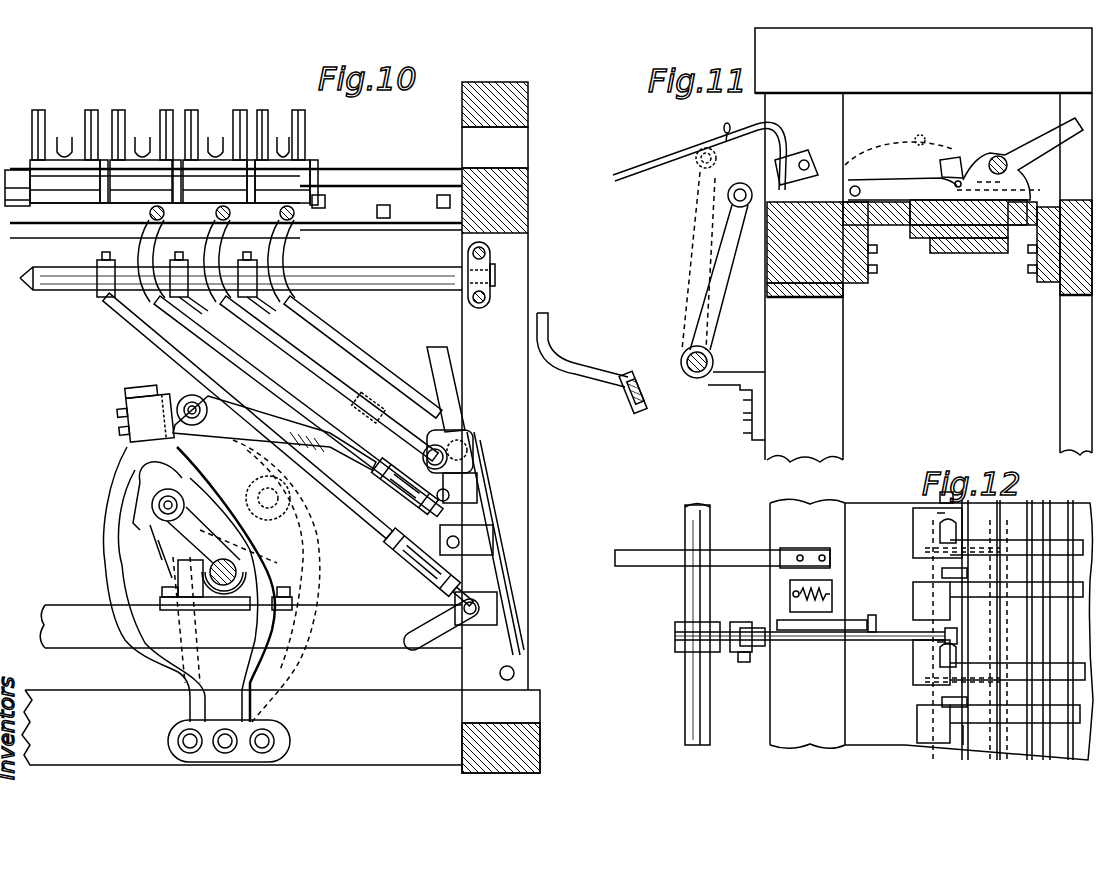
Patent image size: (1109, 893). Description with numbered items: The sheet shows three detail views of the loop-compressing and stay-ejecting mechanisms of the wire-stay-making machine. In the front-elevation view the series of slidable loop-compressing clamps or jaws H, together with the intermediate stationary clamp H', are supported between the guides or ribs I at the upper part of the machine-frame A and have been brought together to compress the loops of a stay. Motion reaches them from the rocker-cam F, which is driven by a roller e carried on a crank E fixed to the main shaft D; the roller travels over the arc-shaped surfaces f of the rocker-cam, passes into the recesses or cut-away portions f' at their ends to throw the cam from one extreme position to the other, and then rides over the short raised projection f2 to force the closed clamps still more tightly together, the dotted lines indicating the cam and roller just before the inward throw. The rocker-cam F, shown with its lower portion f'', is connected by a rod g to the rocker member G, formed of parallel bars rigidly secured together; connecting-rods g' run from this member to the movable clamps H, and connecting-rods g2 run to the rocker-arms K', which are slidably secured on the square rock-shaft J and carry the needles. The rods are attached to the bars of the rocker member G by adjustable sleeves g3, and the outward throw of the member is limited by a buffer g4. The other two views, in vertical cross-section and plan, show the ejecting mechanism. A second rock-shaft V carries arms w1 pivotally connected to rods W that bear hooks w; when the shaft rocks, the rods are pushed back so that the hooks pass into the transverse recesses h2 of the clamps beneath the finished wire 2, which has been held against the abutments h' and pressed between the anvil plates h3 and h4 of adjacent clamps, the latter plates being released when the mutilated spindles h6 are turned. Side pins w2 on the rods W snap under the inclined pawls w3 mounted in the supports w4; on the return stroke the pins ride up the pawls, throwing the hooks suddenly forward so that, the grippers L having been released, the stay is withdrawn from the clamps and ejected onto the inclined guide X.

In FIG. 10, the frame A is at (522, 248).
In FIG. 11, the frame A is at (923, 245).
In FIG. 12, the frame A is at (770, 508).
In FIG. 10, the loop-compressing clamps H is at (184, 157).
In FIG. 11, the loop-compressing clamps H is at (940, 249).
In FIG. 12, the loop-compressing clamps H is at (907, 625).
In FIG. 10, the intermediate stationary clamp H' is at (27, 194).
In FIG. 10, the guides or ribs I is at (399, 178).
In FIG. 10, the rocker-arms K' is at (241, 277).
In FIG. 10, the rock-shaft J is at (250, 272).
In FIG. 10, the rods g is at (245, 427).
In FIG. 10, the connecting-rods g' is at (299, 380).
In FIG. 10, the connecting-rods g2 is at (170, 348).
In FIG. 10, the sleeves g3 is at (484, 500).
In FIG. 10, the buffers g4 is at (570, 355).
In FIG. 10, the rocker members G is at (438, 380).
In FIG. 10, the rocker-cams F is at (105, 563).
In FIG. 10, the strap f is at (187, 596).
In FIG. 10, the recesses or cut-away portions f' is at (158, 495).
In FIG. 10, the stem f'' is at (229, 716).
In FIG. 10, the raised portion or projection f2 is at (157, 551).
In FIG. 10, the rollers e is at (153, 503).
In FIG. 10, the cranks E is at (188, 548).
In FIG. 10, the main shaft D is at (238, 566).
In FIG. 11, the inclined rods or guides X is at (699, 156).
In FIG. 12, the inclined rods or guides X is at (722, 545).
In FIG. 11, the wires 2 is at (957, 180).
In FIG. 12, the wires 2 is at (963, 747).
In FIG. 11, the hooks w is at (983, 175).
In FIG. 12, the hooks w is at (960, 636).
In FIG. 11, the arms w1 is at (728, 263).
In FIG. 12, the arms w1 is at (730, 628).
In FIG. 11, the side pins or projections w2 is at (856, 185).
In FIG. 12, the side pins or projections w2 is at (874, 618).
In FIG. 11, the inclined pawls or dogs w3 is at (804, 155).
In FIG. 12, the inclined pawls or dogs w3 is at (780, 620).
In FIG. 12, the supports w4 is at (835, 586).
In FIG. 11, the hooked rods W is at (881, 177).
In FIG. 12, the hooked rods W is at (888, 643).
In FIG. 11, the grippers L is at (940, 170).
In FIG. 12, the grippers L is at (1040, 590).
In FIG. 11, the abutments h' is at (963, 147).
In FIG. 12, the abutments h' is at (975, 651).
In FIG. 11, the transverse grooves or recesses h2 is at (1025, 180).
In FIG. 12, the transverse grooves or recesses h2 is at (930, 514).
In FIG. 12, the anvil plates h3 is at (968, 576).
In FIG. 12, the confronting anvil plates h4 is at (935, 549).
In FIG. 12, the mutilated spindles h6 is at (980, 658).
In FIG. 11, the rock-shaft V is at (722, 355).
In FIG. 12, the rock-shaft V is at (710, 708).